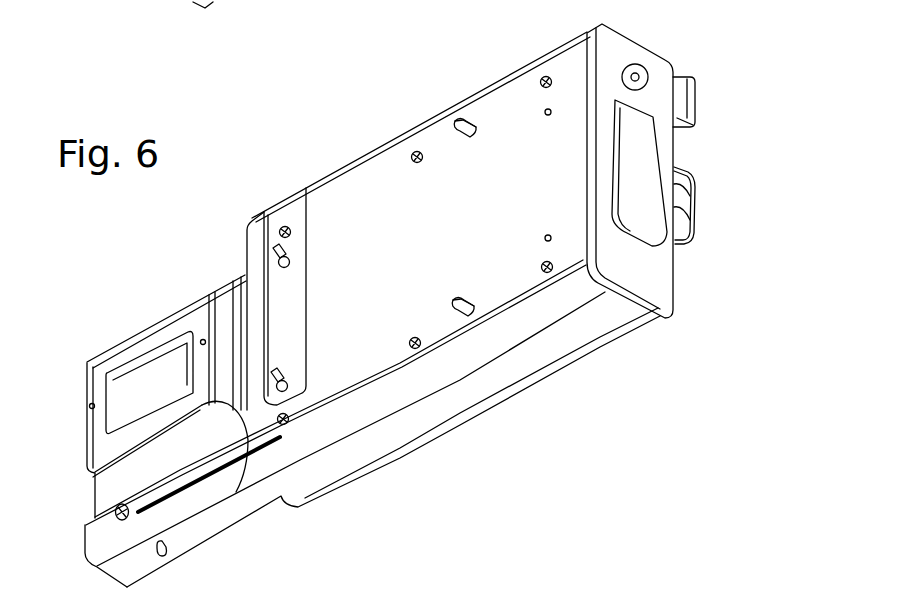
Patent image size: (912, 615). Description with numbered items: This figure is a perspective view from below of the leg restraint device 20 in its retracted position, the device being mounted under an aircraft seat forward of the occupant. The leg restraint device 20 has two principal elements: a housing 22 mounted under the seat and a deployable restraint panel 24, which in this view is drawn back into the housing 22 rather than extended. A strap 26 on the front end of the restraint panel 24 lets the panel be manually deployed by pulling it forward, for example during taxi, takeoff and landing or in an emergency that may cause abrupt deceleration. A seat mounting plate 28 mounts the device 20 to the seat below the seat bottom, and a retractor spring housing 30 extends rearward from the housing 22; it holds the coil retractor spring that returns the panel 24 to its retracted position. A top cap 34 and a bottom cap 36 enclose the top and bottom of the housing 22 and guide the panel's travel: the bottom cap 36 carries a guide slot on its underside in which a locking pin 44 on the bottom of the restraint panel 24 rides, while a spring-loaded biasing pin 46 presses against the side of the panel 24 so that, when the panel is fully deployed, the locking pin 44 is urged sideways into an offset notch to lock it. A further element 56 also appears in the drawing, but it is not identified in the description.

The leg restraint device 20 is at (158, 270).
The housing 22 is at (363, 197).
The restraint panel 24 is at (190, 440).
The strap 26 is at (698, 200).
The seat mounting plate 28 is at (685, 108).
The retractor spring housing 30 is at (112, 0).
The top cap 34 is at (387, 143).
The bottom cap 36 is at (593, 313).
The locking pin 44 is at (165, 548).
The spring-loaded biasing pin 46 is at (472, 327).
The stud 56 is at (463, 126).